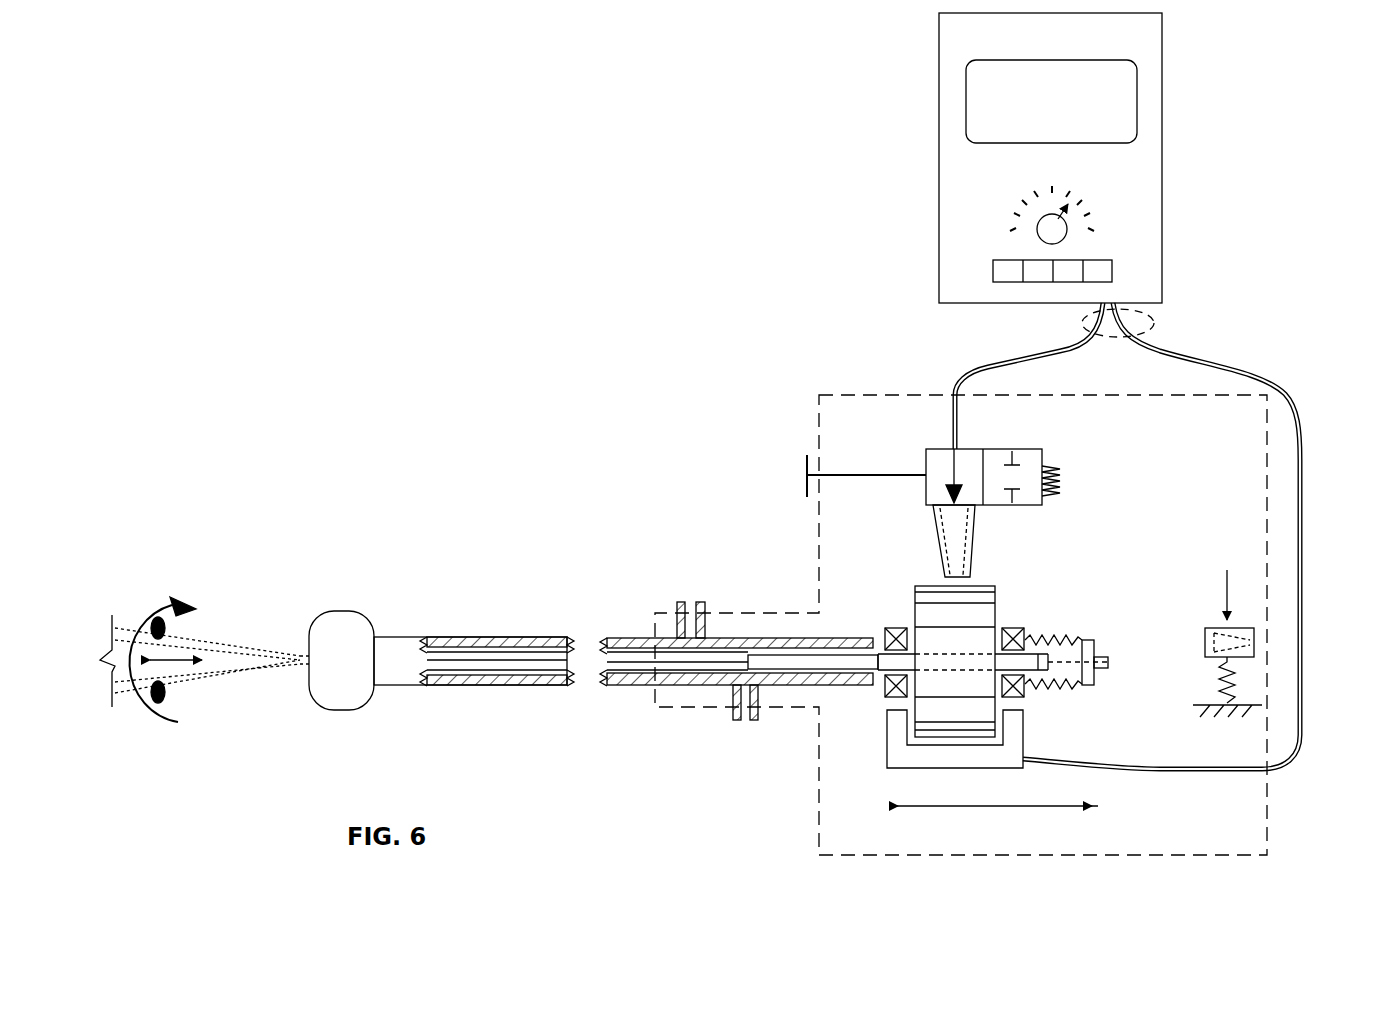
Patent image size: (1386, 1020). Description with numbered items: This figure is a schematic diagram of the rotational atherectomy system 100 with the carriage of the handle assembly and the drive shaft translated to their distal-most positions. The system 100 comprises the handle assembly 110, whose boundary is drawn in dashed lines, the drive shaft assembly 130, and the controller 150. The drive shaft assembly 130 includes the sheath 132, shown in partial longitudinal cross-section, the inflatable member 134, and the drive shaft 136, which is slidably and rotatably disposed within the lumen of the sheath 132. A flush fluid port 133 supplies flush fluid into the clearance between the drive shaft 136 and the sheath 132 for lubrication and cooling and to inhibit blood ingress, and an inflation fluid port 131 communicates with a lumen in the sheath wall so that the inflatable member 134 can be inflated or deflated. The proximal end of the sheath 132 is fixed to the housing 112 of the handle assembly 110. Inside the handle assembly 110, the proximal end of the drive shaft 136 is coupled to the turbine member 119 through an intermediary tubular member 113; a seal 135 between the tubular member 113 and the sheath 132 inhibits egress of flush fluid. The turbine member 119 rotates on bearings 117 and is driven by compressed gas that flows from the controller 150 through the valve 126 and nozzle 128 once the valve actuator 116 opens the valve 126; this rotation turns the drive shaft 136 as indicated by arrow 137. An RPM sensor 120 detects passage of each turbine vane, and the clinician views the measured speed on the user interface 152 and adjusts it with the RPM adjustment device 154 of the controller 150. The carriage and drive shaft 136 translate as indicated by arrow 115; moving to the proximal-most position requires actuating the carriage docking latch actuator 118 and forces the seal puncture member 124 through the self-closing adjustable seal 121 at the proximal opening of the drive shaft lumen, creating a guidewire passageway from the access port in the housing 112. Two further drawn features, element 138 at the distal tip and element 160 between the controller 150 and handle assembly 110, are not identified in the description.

The rotational atherectomy system 100 is at (445, 176).
The handle assembly 110 is at (803, 352).
The housing 112 is at (815, 832).
The intermediary tubular member 113 is at (775, 637).
The arrow 115 is at (960, 806).
The valve actuator 116 is at (806, 463).
The bearings 117 is at (880, 630).
The carriage docking latch actuator 118 is at (1232, 590).
The turbine member 119 is at (915, 590).
The RPM sensor 120 is at (927, 768).
The adjustable seal 121 is at (1070, 685).
The seal puncture member 124 is at (1095, 680).
The valve 126 is at (935, 449).
The nozzle 128 is at (975, 548).
The drive shaft assembly 130 is at (486, 616).
The inflation fluid port 131 is at (680, 602).
The sheath 132 is at (395, 686).
The flush fluid port 133 is at (737, 720).
The inflatable member 134 is at (360, 614).
The seal 135 is at (885, 700).
The drive shaft 136 is at (642, 686).
The arrow 137 is at (162, 603).
The tip electrodes 138 is at (168, 702).
The controller 150 is at (903, 112).
The user interface 152 is at (966, 118).
The RPM adjustment device 154 is at (1037, 231).
The cable bundle 160 is at (1150, 318).